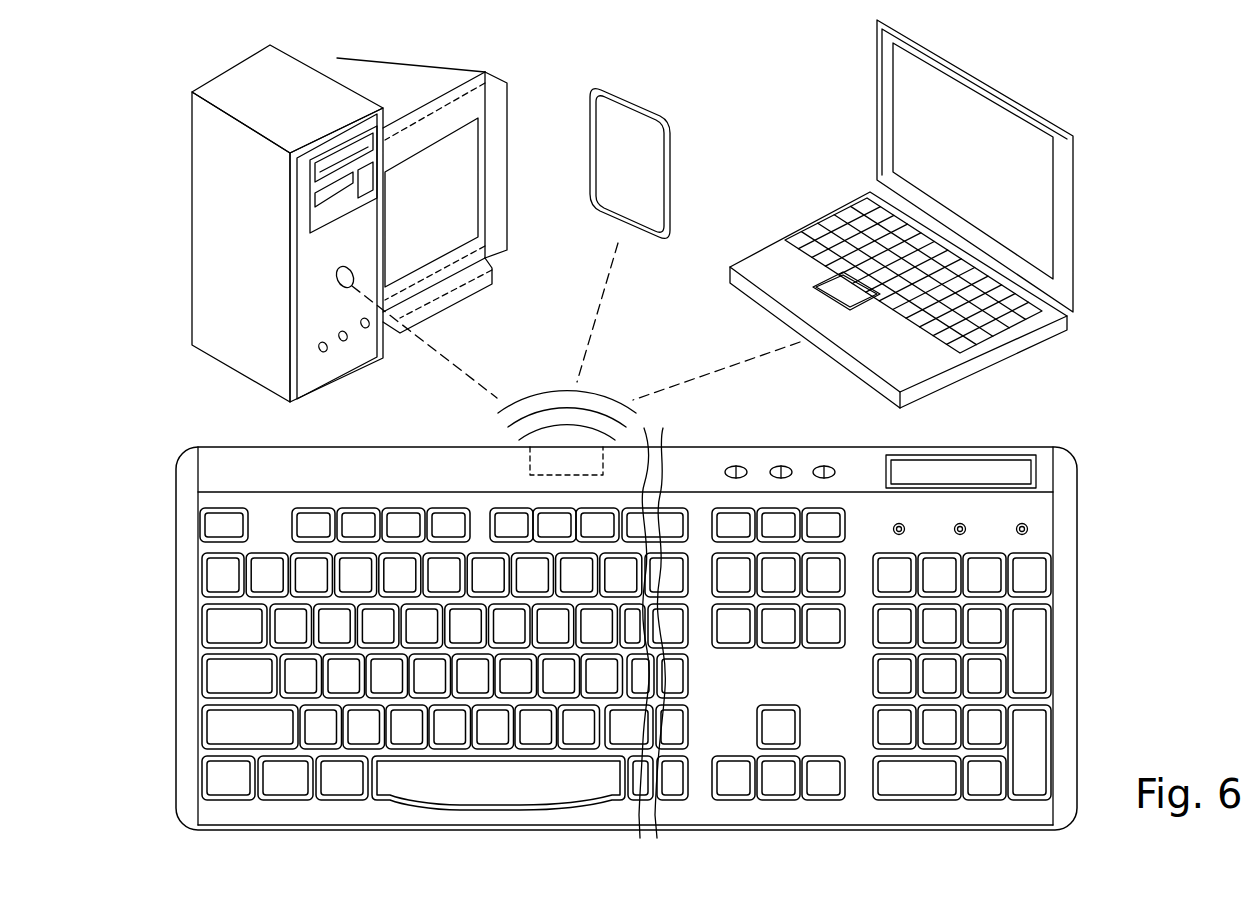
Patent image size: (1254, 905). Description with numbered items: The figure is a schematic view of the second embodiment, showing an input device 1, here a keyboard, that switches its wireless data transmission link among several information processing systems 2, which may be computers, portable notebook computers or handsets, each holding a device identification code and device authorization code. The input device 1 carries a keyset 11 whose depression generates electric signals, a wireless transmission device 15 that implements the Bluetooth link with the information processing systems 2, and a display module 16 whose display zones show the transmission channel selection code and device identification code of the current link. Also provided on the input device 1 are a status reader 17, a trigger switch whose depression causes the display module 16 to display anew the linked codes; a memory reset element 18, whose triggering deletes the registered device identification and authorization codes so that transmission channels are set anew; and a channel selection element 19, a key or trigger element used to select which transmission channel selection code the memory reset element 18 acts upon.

The input device 1 is at (175, 675).
The information processing system 2 is at (1107, 175).
The keyset 11 is at (1040, 540).
The wireless transmission device 15 is at (540, 462).
The display module 16 is at (1034, 464).
The status reader 17 is at (823, 466).
The memory reset element 18 is at (782, 466).
The channel selection element 19 is at (737, 466).